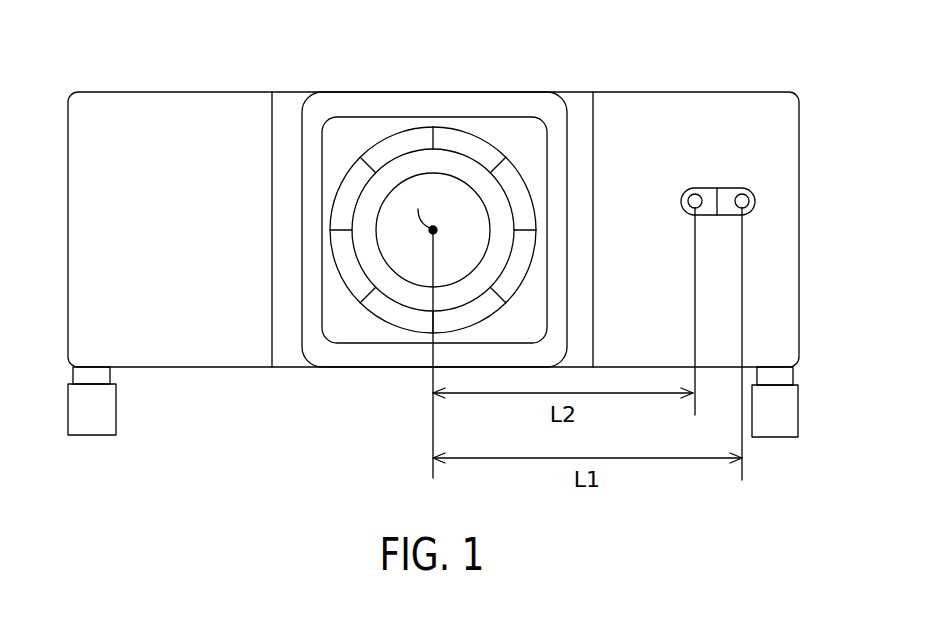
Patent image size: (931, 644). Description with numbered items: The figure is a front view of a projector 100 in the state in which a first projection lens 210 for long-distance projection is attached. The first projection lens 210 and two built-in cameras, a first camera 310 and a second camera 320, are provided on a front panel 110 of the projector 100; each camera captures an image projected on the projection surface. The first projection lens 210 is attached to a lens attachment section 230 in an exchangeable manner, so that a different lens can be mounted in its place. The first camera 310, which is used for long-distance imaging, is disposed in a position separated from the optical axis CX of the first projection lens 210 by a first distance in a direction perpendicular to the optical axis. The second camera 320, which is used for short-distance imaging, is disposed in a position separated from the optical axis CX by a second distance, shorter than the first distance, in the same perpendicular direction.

The projector 100 is at (433, 222).
The front panel 110 is at (160, 110).
The first projection lens 210 is at (462, 153).
The lens attachment section 230 is at (517, 168).
The first camera 310 is at (742, 188).
The second camera 320 is at (695, 188).